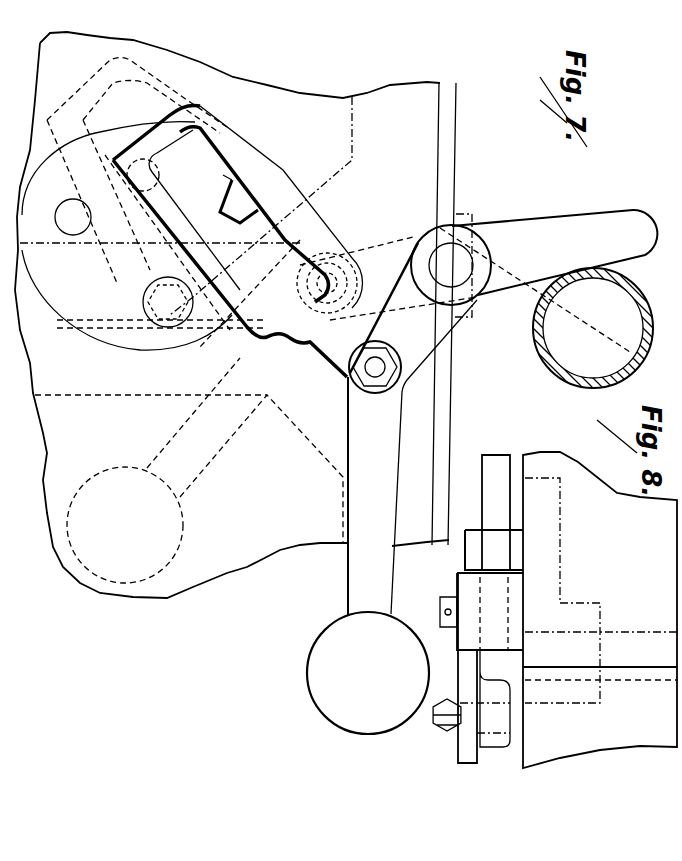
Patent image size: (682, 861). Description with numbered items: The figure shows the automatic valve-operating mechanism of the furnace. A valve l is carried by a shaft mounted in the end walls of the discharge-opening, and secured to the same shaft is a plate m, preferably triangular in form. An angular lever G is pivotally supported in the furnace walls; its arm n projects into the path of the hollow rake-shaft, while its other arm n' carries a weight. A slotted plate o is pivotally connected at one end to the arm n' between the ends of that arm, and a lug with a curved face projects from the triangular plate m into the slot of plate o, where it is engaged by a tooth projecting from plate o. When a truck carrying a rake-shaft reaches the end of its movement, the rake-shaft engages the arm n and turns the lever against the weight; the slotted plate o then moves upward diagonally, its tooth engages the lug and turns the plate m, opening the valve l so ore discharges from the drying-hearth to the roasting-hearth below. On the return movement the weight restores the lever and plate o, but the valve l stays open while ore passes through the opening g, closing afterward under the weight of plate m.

In FIG. 7, the arm n is at (534, 257).
In FIG. 7, the arm n' is at (375, 478).
In FIG. 8, the arm n' is at (455, 669).
In FIG. 7, the shaft bar a is at (413, 314).
In FIG. 8, the shaft bar a is at (480, 657).
In FIG. 7, the plate o is at (240, 241).
In FIG. 7, the plate m is at (75, 312).
In FIG. 8, the plate m is at (600, 610).
In FIG. 7, the opening g is at (62, 355).
In FIG. 7, the valve l is at (153, 283).